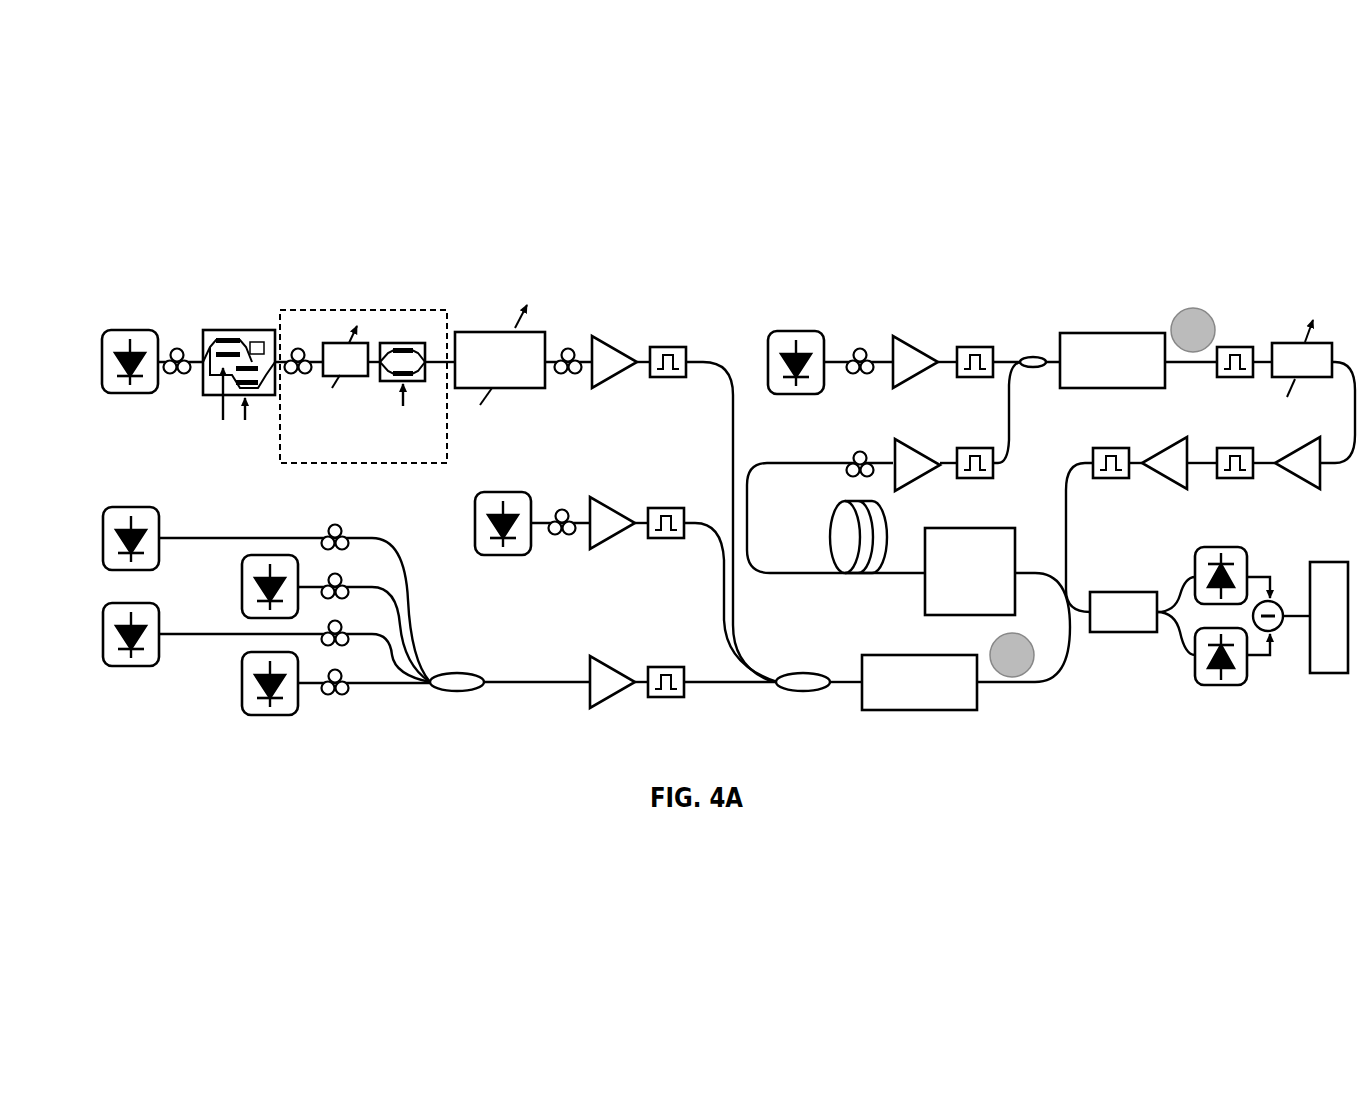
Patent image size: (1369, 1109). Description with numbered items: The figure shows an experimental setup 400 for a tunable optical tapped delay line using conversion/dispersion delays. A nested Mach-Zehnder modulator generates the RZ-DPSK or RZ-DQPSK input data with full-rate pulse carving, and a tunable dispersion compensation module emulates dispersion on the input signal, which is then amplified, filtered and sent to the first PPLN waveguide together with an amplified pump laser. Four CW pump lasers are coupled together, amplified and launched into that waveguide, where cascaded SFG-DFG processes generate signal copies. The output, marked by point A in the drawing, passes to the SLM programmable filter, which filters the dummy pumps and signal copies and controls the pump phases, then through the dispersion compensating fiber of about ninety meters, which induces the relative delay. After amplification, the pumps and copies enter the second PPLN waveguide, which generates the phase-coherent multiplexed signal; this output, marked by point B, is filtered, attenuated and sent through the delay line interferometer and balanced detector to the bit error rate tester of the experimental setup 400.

The experimental setup 400 is at (166, 251).
The monitoring point A after PPLN-1 A is at (1012, 655).
The monitoring point B after PPLN-2 B is at (1193, 330).